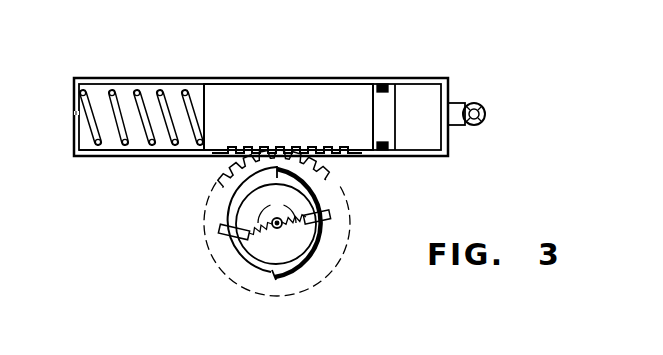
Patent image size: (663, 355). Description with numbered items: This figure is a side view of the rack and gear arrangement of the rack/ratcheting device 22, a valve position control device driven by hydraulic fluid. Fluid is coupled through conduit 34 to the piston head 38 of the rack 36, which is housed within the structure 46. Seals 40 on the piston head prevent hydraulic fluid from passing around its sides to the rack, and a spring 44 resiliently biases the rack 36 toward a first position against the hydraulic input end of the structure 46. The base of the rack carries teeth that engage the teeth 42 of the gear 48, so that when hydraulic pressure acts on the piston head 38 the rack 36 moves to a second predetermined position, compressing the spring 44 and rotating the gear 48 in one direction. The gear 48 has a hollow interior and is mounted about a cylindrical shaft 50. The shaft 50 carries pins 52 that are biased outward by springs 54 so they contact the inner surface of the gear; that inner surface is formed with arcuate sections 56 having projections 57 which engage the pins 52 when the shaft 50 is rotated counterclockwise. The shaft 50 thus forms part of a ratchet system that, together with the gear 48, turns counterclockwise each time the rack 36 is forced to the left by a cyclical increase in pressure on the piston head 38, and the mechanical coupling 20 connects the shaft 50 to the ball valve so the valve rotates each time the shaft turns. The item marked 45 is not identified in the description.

The mechanical coupling 20 is at (277, 229).
The rack/ratcheting device 22 is at (290, 78).
The conduit 34 is at (483, 104).
The rack 36 is at (336, 90).
The piston head 38 is at (397, 112).
The seals 40 is at (384, 84).
The teeth 42 is at (335, 167).
The spring 44 is at (162, 84).
The vent opening 45 is at (74, 116).
The structure 46 is at (120, 153).
The gear 48 is at (347, 205).
The cylindrical shaft 50 is at (250, 208).
The pins 52 is at (218, 234).
The springs 54 is at (277, 214).
The arcuate sections 56 is at (233, 253).
The projections 57 is at (272, 278).